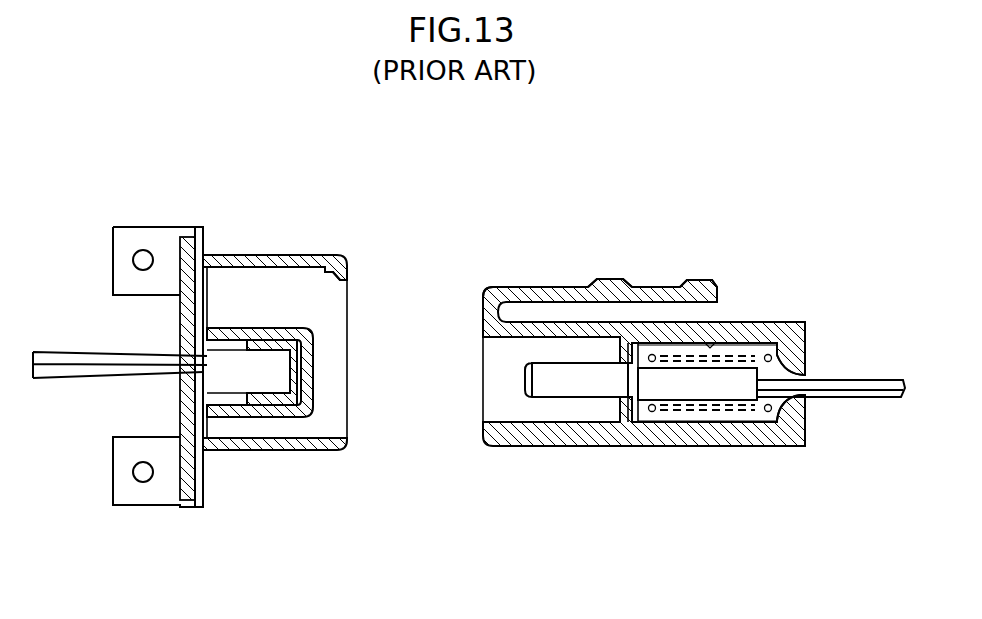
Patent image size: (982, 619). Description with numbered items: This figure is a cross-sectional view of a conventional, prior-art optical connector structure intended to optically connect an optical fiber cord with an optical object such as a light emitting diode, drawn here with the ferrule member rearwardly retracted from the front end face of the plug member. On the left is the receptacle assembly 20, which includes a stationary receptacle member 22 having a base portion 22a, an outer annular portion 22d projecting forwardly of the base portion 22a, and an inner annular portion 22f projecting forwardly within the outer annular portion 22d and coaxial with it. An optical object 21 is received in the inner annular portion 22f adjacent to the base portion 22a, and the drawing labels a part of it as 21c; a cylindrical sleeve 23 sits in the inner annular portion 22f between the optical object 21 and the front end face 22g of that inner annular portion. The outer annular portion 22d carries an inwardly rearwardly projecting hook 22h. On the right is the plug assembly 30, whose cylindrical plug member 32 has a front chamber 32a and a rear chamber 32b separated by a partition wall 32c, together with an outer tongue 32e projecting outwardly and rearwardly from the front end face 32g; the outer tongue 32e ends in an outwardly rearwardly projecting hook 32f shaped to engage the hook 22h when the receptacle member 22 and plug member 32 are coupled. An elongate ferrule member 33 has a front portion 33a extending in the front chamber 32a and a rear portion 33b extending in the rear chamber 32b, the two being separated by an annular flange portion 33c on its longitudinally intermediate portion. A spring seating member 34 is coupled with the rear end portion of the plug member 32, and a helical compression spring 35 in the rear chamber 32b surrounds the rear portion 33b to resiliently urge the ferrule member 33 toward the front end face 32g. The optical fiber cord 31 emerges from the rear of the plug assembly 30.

The receptacle assembly 20 is at (268, 137).
The optical object 21 is at (213, 363).
The contact portion 21c is at (256, 330).
The stationary receptacle member 22 is at (330, 260).
The base portion 22a is at (197, 493).
The outer annular portion 22d is at (287, 257).
The inner annular portion 22f is at (250, 420).
The front end face 22g is at (315, 345).
The inwardly rearwardly projecting hook 22h is at (334, 278).
The cylindrical sleeve 23 is at (301, 443).
The plug assembly 30 is at (644, 143).
The cable 31 is at (855, 382).
The cylindrical plug member 32 is at (675, 441).
The front chamber 32a is at (482, 408).
The rear chamber 32b is at (725, 336).
The partition wall 32c is at (620, 429).
The outer tongue 32e is at (591, 291).
The outwardly rearwardly projecting hook 32f is at (626, 284).
The front end face 32g is at (485, 292).
The elongate ferrule member 33 is at (568, 357).
The front portion 33a is at (545, 383).
The rear portion 33b is at (797, 366).
The annular flange portion 33c is at (636, 426).
The spring seating member 34 is at (812, 432).
The helical compression spring 35 is at (722, 445).